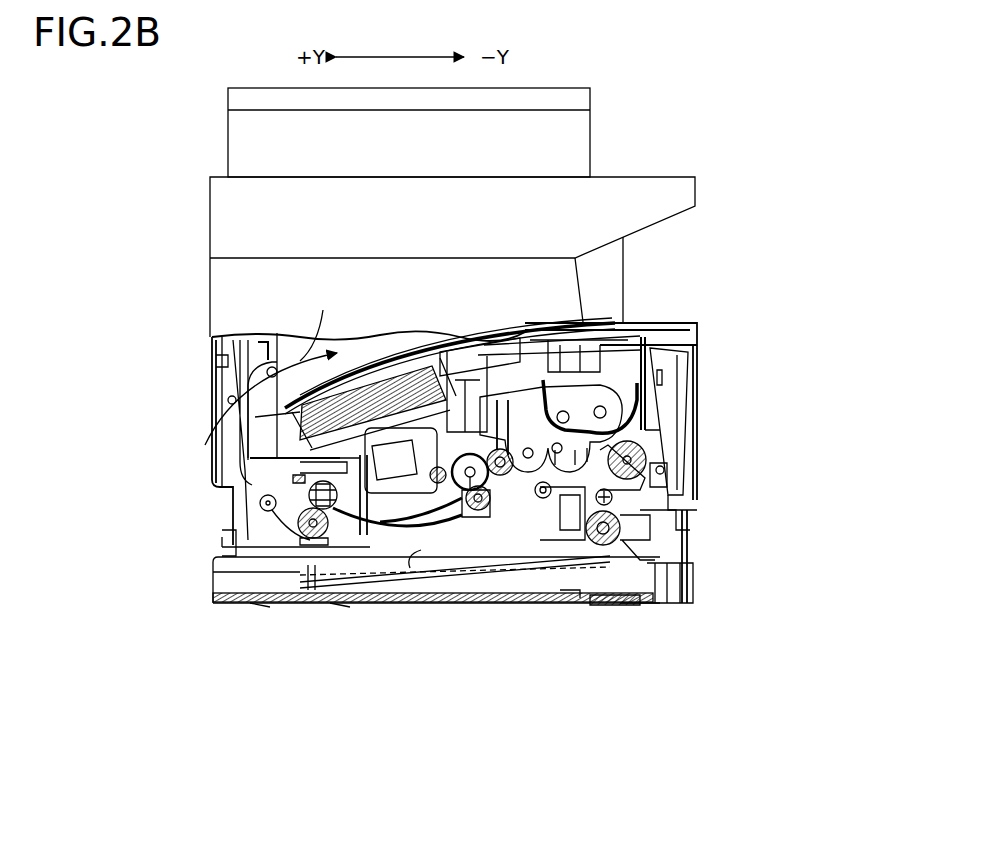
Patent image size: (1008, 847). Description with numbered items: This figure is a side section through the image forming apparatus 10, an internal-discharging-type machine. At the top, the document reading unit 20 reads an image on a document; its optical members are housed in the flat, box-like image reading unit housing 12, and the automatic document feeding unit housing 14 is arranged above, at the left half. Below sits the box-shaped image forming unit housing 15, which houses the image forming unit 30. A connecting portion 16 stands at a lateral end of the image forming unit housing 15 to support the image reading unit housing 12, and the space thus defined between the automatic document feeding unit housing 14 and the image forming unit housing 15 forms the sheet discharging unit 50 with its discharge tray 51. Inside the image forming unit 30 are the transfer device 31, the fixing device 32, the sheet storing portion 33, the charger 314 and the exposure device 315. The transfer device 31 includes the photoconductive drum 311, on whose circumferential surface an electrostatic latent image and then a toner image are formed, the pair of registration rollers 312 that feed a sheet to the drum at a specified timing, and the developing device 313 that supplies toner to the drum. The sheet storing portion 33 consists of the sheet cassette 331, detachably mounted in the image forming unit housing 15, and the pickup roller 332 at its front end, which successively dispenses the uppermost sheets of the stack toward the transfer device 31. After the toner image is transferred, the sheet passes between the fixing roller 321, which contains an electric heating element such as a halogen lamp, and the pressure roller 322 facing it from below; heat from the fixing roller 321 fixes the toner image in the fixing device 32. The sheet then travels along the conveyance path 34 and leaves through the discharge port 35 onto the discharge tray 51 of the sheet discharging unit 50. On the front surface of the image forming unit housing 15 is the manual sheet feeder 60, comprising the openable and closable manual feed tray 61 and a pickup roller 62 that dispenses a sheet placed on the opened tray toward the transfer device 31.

The image forming apparatus 10 is at (719, 165).
The image reading unit housing 12 is at (233, 233).
The automatic document feeding unit housing 14 is at (250, 131).
The image forming unit housing 15 is at (210, 403).
The connecting portion 16 is at (532, 298).
The document reading unit 20 is at (218, 148).
The image forming unit 30 is at (692, 692).
The transfer device 31 is at (570, 650).
The photoconductive drum 311 is at (470, 490).
The pair of registration rollers 312 is at (540, 485).
The developing device 313 is at (577, 478).
The charger 314 is at (487, 340).
The exposure device 315 is at (395, 378).
The fixing device 32 is at (338, 650).
The fixing roller 321 is at (333, 532).
The pressure roller 322 is at (303, 535).
The sheet storing portion 33 is at (735, 650).
The sheet cassette 331 is at (607, 608).
The pickup roller 332 is at (645, 530).
The conveyance path 34 is at (247, 430).
The discharge port 35 is at (265, 365).
The sheet discharging unit 50 is at (380, 358).
The discharge tray 51 is at (447, 350).
The manual sheet feeder 60 is at (785, 385).
The manual feed tray 61 is at (693, 388).
The pickup roller 62 is at (640, 452).